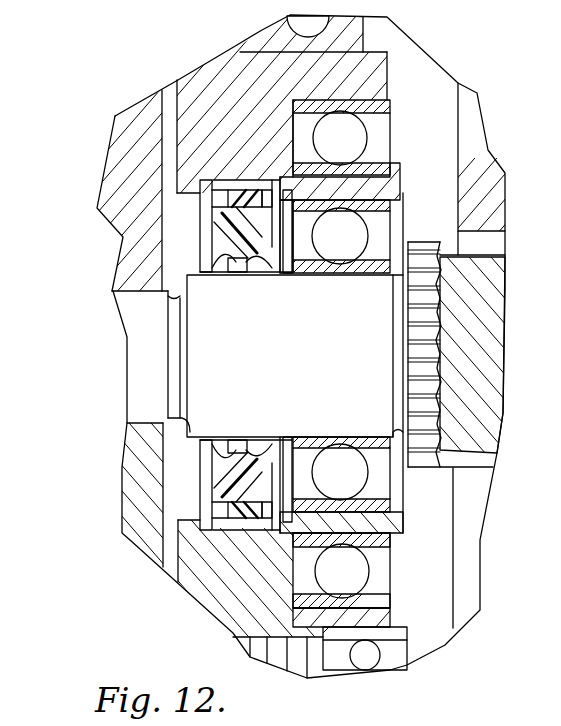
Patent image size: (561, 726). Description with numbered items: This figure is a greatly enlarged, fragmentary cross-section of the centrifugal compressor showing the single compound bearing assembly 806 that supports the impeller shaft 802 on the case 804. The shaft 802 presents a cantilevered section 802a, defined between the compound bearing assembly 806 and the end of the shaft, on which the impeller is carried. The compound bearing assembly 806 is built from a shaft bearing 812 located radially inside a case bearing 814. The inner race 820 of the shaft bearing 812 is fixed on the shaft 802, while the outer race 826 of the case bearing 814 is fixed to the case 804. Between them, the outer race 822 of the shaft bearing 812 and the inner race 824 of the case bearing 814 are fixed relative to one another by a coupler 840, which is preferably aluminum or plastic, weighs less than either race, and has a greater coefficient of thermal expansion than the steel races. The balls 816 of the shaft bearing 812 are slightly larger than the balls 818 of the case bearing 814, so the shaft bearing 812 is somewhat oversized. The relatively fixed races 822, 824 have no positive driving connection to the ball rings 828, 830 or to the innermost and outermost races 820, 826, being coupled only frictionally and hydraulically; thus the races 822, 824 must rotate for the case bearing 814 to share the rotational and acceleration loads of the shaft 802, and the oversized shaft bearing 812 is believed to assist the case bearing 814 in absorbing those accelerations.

The impeller shaft 802 is at (192, 440).
The cantilevered section 802a is at (140, 313).
The case 804 is at (208, 593).
The compound bearing assembly 806 is at (395, 553).
The shaft bearing 812 is at (302, 435).
The case bearing 814 is at (393, 100).
The balls of the shaft bearing 816 is at (342, 450).
The balls of the case bearing 818 is at (365, 135).
The inner race of the shaft bearing 820 is at (373, 267).
The outer race of the shaft bearing 822 is at (380, 203).
The inner race of the case bearing 824 is at (387, 541).
The outer race of the case bearing 826 is at (387, 602).
The ball ring 828 is at (372, 483).
The ball ring 830 is at (320, 127).
The coupler 840 is at (393, 180).